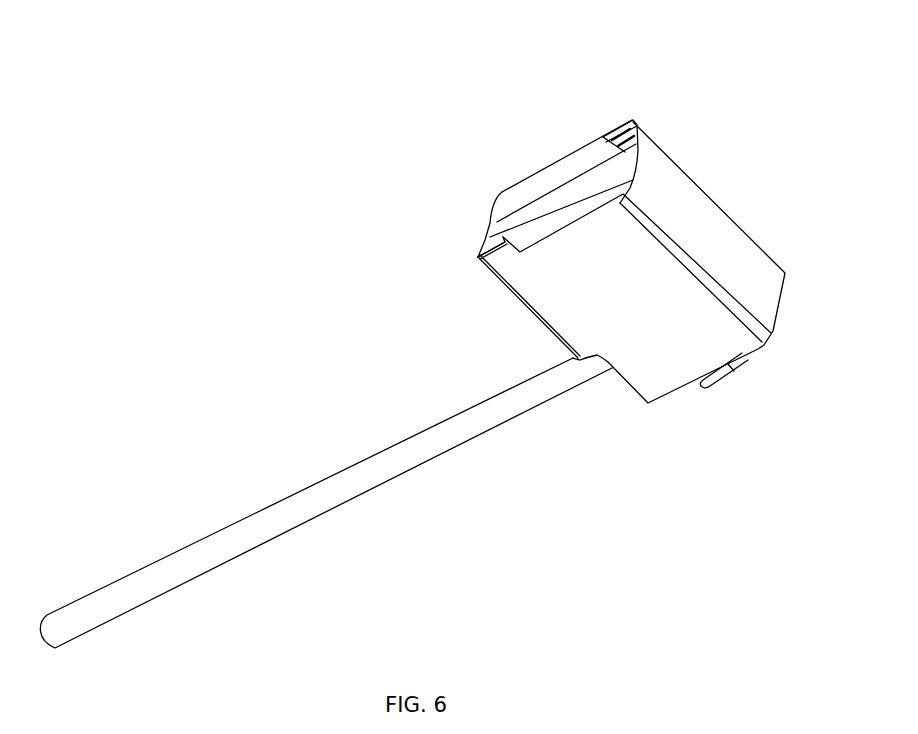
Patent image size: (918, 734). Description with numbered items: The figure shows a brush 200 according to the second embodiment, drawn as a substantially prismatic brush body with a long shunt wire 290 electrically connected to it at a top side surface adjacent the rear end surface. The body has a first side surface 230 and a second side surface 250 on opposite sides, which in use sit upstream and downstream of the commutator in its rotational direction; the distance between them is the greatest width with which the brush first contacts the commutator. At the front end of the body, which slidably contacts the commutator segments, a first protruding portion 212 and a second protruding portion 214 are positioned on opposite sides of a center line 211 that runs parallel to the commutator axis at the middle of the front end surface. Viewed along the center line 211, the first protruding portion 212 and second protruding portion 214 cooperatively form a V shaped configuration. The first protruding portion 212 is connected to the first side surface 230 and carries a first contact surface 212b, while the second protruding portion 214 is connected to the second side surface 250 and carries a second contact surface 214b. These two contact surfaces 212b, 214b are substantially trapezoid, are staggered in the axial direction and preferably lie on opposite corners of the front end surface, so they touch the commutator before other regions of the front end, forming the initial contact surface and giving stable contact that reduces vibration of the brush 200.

The brush 200 is at (294, 113).
The first side surface 230 is at (617, 333).
The shunt wire 290 is at (279, 502).
The second side surface 250 is at (582, 138).
The second protruding portion 214 is at (545, 186).
The center line 211 is at (494, 218).
The first protruding portion 212 is at (627, 198).
The first contact surface 212b is at (480, 253).
The second contact surface 214b is at (637, 125).